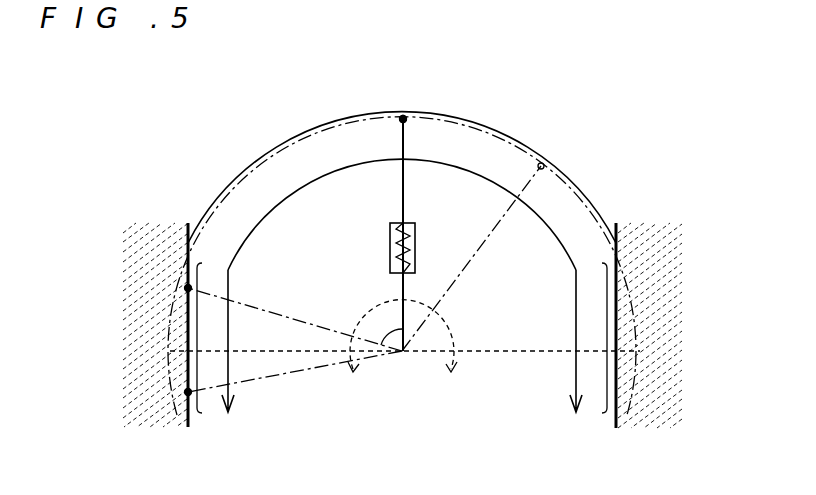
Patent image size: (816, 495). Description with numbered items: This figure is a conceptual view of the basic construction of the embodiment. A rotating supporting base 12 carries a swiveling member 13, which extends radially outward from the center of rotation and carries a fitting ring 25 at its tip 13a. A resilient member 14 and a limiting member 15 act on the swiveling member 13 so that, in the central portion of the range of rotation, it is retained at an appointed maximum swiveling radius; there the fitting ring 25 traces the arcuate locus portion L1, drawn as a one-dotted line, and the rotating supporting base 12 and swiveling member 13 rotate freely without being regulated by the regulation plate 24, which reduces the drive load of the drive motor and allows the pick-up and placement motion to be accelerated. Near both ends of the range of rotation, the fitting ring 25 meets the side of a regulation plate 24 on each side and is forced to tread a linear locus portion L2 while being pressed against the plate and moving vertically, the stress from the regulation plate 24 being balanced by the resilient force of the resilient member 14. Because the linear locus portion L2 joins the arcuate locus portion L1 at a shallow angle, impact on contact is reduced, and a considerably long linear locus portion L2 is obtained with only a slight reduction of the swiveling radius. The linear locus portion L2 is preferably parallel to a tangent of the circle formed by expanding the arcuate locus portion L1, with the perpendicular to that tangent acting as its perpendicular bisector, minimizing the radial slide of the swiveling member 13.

The rotating supporting base 12 is at (402, 355).
The swiveling member 13 is at (403, 180).
The arm tip 13a is at (403, 118).
The fitting ring 25 is at (403, 119).
The resilient member 14 is at (390, 250).
The limiting member 15 is at (417, 240).
The regulation plate 24 is at (152, 222).
The arcuate locus portion L1 is at (521, 141).
The linear locus portion L2 is at (198, 328).